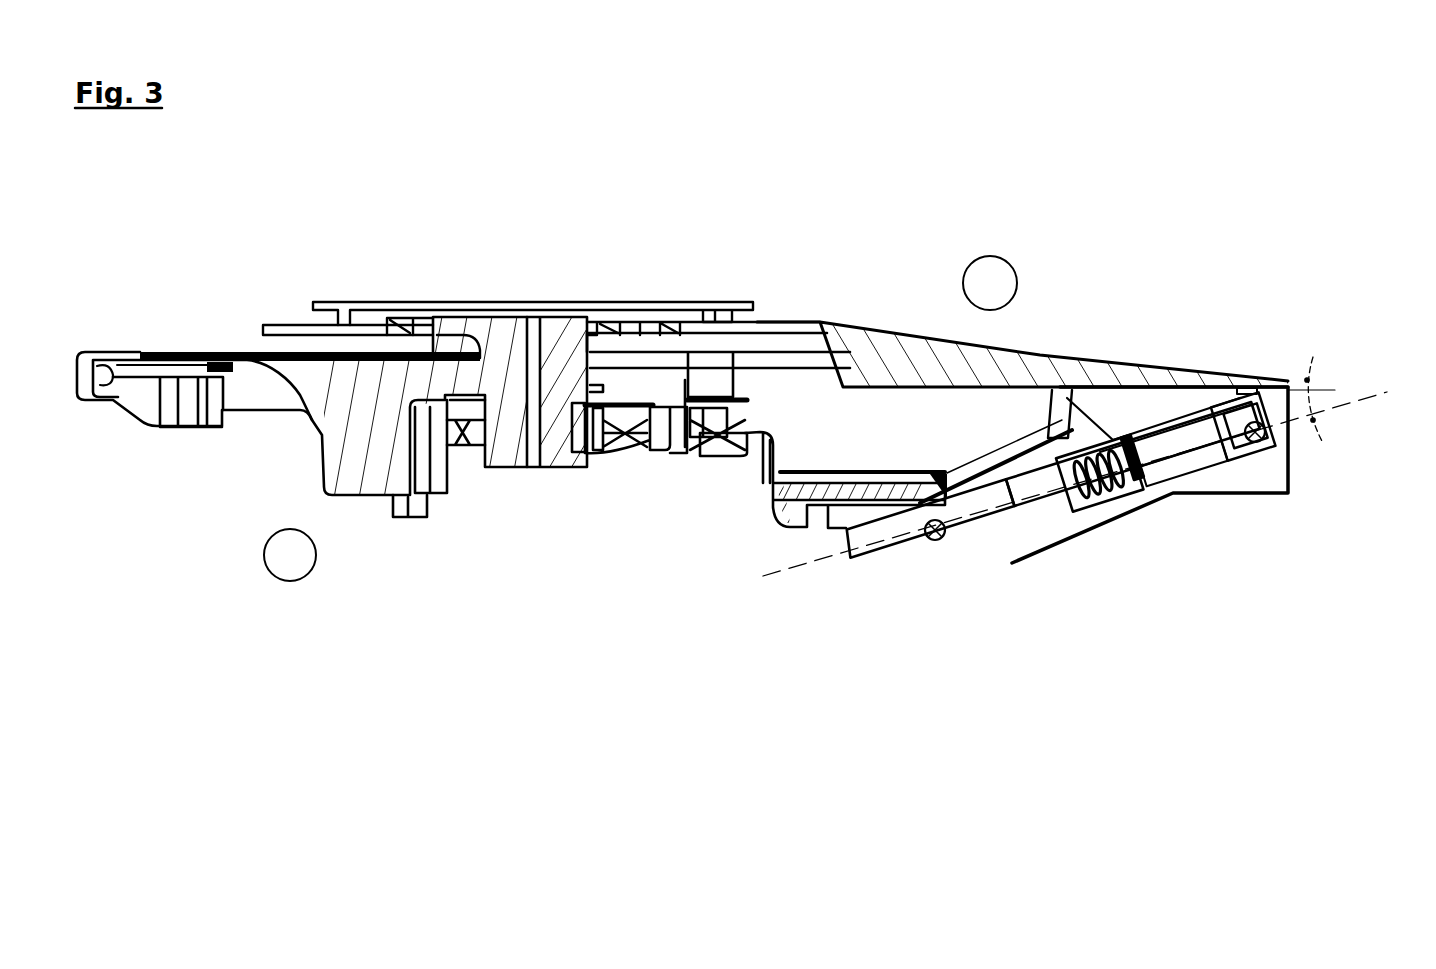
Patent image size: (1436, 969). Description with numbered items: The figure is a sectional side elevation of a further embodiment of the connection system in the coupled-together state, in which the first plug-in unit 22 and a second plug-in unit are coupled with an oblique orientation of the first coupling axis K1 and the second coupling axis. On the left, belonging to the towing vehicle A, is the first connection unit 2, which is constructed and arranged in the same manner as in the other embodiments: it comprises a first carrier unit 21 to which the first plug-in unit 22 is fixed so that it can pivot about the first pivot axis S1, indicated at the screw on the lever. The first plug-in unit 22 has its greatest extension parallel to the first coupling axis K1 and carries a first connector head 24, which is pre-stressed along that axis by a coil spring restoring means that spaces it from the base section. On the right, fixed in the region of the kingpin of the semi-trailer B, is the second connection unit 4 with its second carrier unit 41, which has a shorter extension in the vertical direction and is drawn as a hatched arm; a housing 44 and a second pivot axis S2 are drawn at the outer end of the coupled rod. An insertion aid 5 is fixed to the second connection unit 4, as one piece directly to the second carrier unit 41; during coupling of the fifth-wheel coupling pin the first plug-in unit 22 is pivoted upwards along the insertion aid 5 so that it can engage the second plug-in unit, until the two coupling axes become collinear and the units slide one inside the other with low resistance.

The first connection unit 2 is at (799, 620).
The first carrier unit 21 is at (845, 535).
The first plug-in unit 22 is at (987, 530).
The first connector head 24 is at (1173, 440).
The second connection unit 4 is at (1308, 460).
The second carrier unit 41 is at (1115, 402).
The housing 44 is at (1222, 465).
The insertion aid 5 is at (1058, 563).
The first pivot axis S1 is at (930, 545).
The second pivot axis S2 is at (1278, 387).
The first coupling axis K1 is at (1343, 401).
The towing vehicle A is at (290, 555).
The semi-trailer B is at (990, 283).